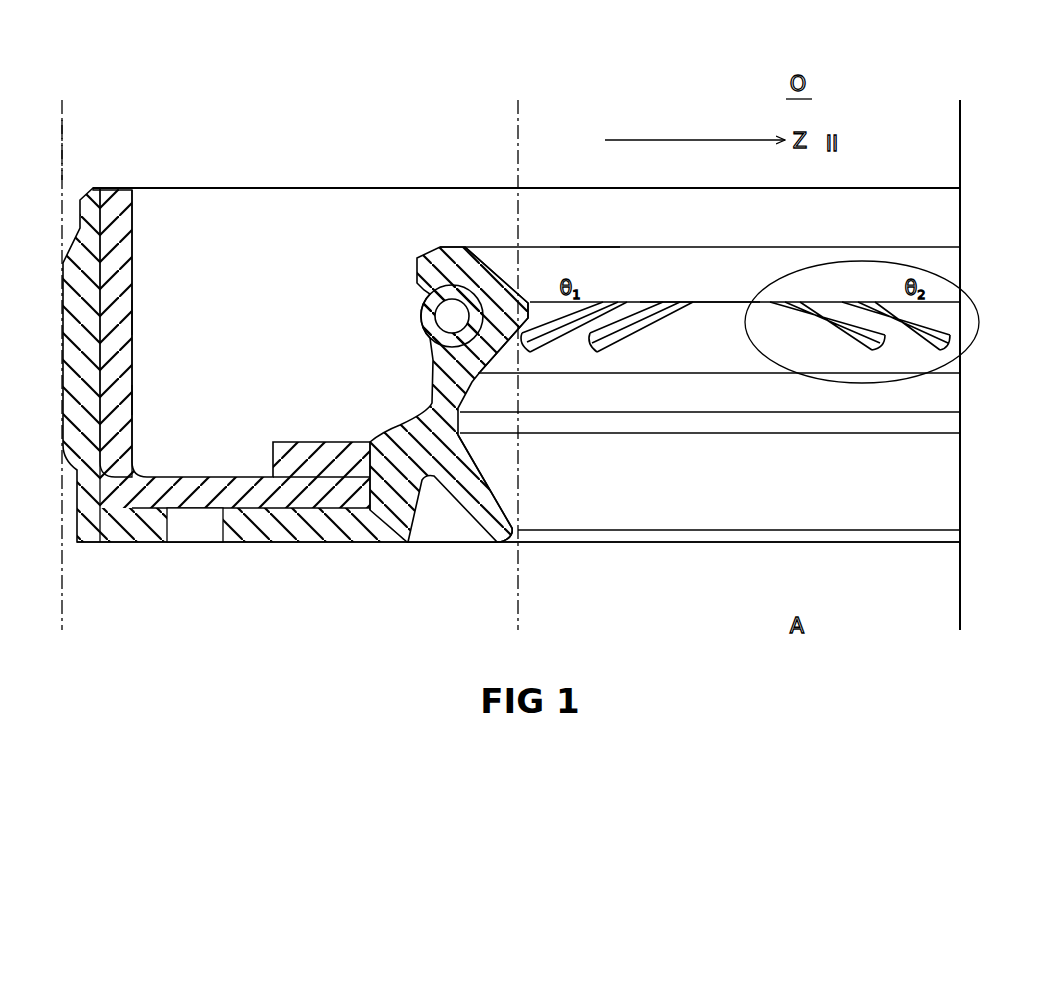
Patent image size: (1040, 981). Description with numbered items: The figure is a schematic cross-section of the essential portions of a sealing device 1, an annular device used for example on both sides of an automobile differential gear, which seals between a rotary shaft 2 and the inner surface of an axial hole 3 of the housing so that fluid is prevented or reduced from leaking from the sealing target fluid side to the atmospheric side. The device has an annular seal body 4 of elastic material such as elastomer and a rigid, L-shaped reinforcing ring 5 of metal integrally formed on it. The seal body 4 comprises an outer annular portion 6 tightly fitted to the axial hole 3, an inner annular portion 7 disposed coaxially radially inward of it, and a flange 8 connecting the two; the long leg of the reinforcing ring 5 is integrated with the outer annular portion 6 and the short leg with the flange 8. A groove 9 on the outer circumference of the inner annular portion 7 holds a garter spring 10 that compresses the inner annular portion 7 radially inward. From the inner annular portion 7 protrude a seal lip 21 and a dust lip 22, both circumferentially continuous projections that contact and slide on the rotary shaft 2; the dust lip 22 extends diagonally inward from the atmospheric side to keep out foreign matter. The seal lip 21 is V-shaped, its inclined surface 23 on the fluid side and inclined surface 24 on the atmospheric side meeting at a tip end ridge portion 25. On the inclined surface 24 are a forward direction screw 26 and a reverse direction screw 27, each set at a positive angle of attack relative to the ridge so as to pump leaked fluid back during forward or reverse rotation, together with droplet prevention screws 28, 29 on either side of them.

The sealing device 1 is at (577, 113).
The rotary shaft 2 is at (515, 570).
The axial hole 3 is at (63, 148).
The seal body 4 is at (190, 185).
The reinforcing ring 5 is at (135, 318).
The outer annular portion 6 is at (137, 400).
The inner annular portion 7 is at (415, 262).
The flange 8 is at (265, 545).
The groove 9 is at (452, 318).
The garter spring 10 is at (420, 297).
The seal lip 21 is at (530, 300).
The dust lip 22 is at (512, 508).
The inclined surface of the sealing target fluid side 23 is at (722, 275).
The inclined surface of the atmospheric side 24 is at (715, 345).
The tip end ridge portion 25 is at (680, 305).
The forward direction screw 26 is at (552, 345).
The reverse direction screw 27 is at (915, 352).
The droplet prevention screw 28 is at (605, 345).
The droplet prevention screw 29 is at (882, 305).